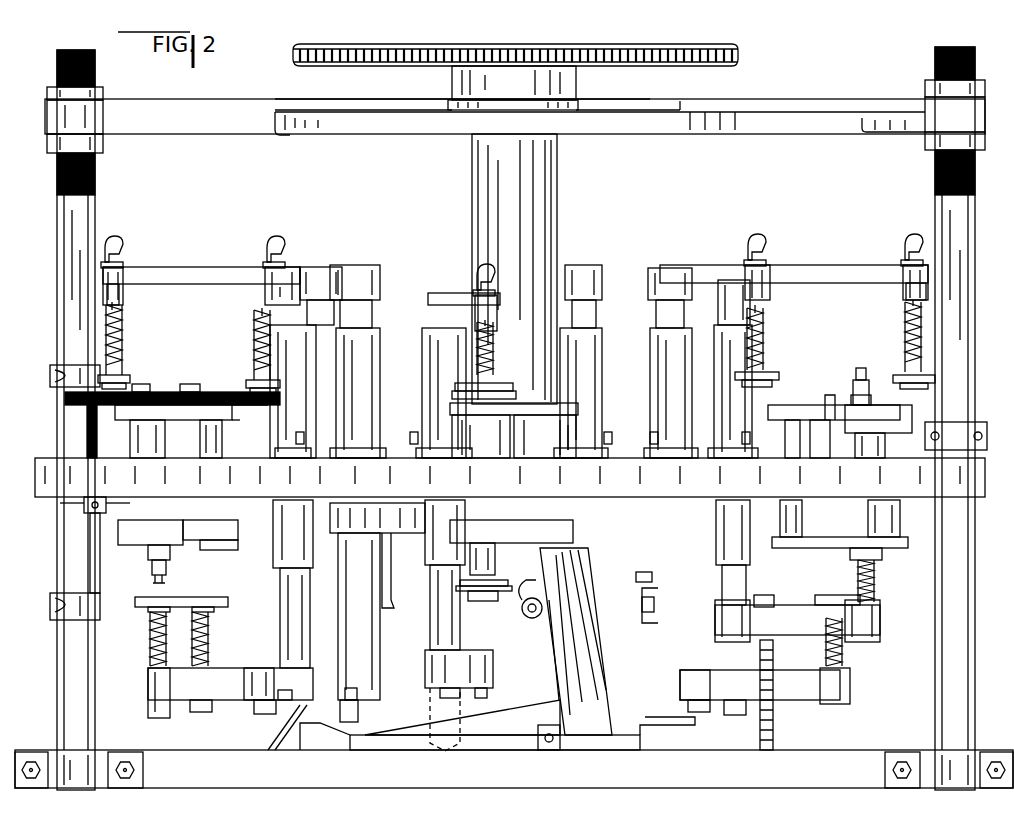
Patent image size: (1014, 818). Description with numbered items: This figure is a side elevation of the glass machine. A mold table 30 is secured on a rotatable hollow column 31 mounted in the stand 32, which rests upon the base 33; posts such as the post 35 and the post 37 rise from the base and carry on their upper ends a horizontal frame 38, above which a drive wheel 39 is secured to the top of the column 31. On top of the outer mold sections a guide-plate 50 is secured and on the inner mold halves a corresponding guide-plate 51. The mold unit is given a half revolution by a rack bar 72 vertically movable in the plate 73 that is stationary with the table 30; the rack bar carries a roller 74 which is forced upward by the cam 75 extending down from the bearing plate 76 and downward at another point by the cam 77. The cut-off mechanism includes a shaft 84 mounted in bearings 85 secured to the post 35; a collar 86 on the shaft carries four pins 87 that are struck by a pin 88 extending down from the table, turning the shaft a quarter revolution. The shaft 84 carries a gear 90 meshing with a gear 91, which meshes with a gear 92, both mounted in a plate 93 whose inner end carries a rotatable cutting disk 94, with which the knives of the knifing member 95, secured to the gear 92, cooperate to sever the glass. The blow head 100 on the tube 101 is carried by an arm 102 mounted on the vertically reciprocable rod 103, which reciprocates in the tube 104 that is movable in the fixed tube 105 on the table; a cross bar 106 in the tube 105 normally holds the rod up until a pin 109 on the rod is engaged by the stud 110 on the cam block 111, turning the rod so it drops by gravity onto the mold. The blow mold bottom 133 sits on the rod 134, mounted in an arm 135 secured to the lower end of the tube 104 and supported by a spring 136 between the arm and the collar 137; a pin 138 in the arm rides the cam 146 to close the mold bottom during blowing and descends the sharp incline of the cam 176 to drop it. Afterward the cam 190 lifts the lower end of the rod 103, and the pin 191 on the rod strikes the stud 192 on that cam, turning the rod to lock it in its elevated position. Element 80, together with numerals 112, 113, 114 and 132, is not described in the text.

The mold table 30 is at (36, 471).
The rotatable hollow column 31 is at (548, 220).
The stand 32 is at (570, 645).
The base 33 is at (852, 768).
The post 35 is at (70, 652).
The post 37 is at (962, 608).
The horizontal frame 38 is at (797, 120).
The drive wheel 39 is at (636, 52).
The guide-plate 50 is at (880, 432).
The guide-plate 51 is at (795, 405).
The rack bar 72 is at (535, 597).
The plate 73 is at (538, 561).
The roller 74 is at (527, 616).
The cam 75 is at (640, 606).
The bearing plate 76 is at (360, 530).
The cam 77 is at (438, 592).
The bracket 80 is at (112, 525).
The shaft 84 is at (100, 568).
The bearings 85 is at (80, 373).
The collar 86 is at (82, 510).
The pins 87 is at (118, 485).
The pin 88 is at (815, 503).
The gear 90 is at (66, 408).
The gear 91 is at (142, 390).
The gear 92 is at (205, 392).
The plate 93 is at (182, 384).
The cutter or disk 94 is at (266, 407).
The knifing member 95 is at (236, 422).
The blow head 100 is at (128, 375).
The tube 101 is at (124, 325).
The arm 102 is at (203, 267).
The rod 103 is at (308, 318).
The tube 104 is at (280, 598).
The fixed tube 105 is at (268, 336).
The cross bar 106 is at (318, 436).
The pin 109 is at (325, 725).
The stud 110 is at (362, 712).
The cam block 111 is at (385, 738).
The socket 112 is at (105, 283).
The hook bolt 113 is at (122, 263).
The spring guide 114 is at (122, 316).
The plate 132 is at (413, 135).
The blow mold bottom 133 is at (170, 598).
The rod 134 is at (150, 630).
The arm 135 is at (226, 680).
The spring 136 is at (464, 697).
The collar 137 is at (878, 568).
The pin 138 is at (265, 715).
The cam 146 is at (774, 652).
The cam 176 is at (270, 752).
The cam 190 is at (523, 715).
The pin 191 is at (357, 725).
The stud 192 is at (540, 736).